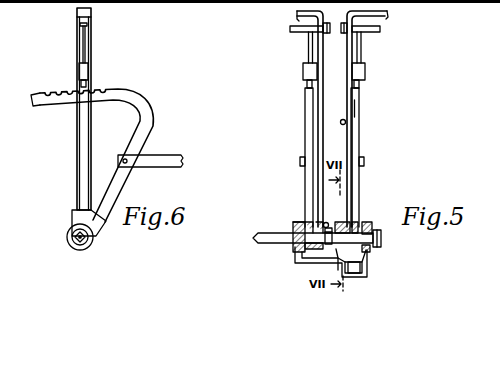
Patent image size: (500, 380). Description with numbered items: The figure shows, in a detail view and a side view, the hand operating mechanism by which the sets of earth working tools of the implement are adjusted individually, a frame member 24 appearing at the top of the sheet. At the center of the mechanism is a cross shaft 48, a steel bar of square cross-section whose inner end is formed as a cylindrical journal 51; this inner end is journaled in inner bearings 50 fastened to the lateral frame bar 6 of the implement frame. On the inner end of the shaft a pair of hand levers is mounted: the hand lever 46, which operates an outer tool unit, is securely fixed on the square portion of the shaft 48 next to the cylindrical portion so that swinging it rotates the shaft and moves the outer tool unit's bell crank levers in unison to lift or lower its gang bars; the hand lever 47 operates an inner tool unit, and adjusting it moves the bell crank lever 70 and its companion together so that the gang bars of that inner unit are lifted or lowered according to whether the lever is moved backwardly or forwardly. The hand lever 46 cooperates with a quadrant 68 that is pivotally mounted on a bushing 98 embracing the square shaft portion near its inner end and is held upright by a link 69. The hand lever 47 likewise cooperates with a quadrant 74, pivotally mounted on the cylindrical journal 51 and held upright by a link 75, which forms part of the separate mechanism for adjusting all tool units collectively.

In FIG. 5, the frame member 24 is at (222, 2).
In FIG. 6, the hand lever 46 is at (77, 25).
In FIG. 5, the hand lever 46 is at (297, 13).
In FIG. 5, the hand lever 47 is at (388, 13).
In FIG. 5, the cross shaft 48 is at (264, 232).
In FIG. 5, the inner bearings 50 is at (299, 222).
In FIG. 5, the cylindrical journal 51 is at (374, 245).
In FIG. 5, the lateral frame bar 6 is at (360, 273).
In FIG. 6, the quadrant 68 is at (40, 106).
In FIG. 5, the quadrant 68 is at (307, 103).
In FIG. 6, the link 69 is at (178, 154).
In FIG. 5, the link 69 is at (300, 159).
In FIG. 5, the bell crank lever 70 is at (343, 224).
In FIG. 5, the quadrant 74 is at (359, 112).
In FIG. 5, the link 75 is at (364, 163).
In FIG. 5, the bushing 98 is at (292, 250).